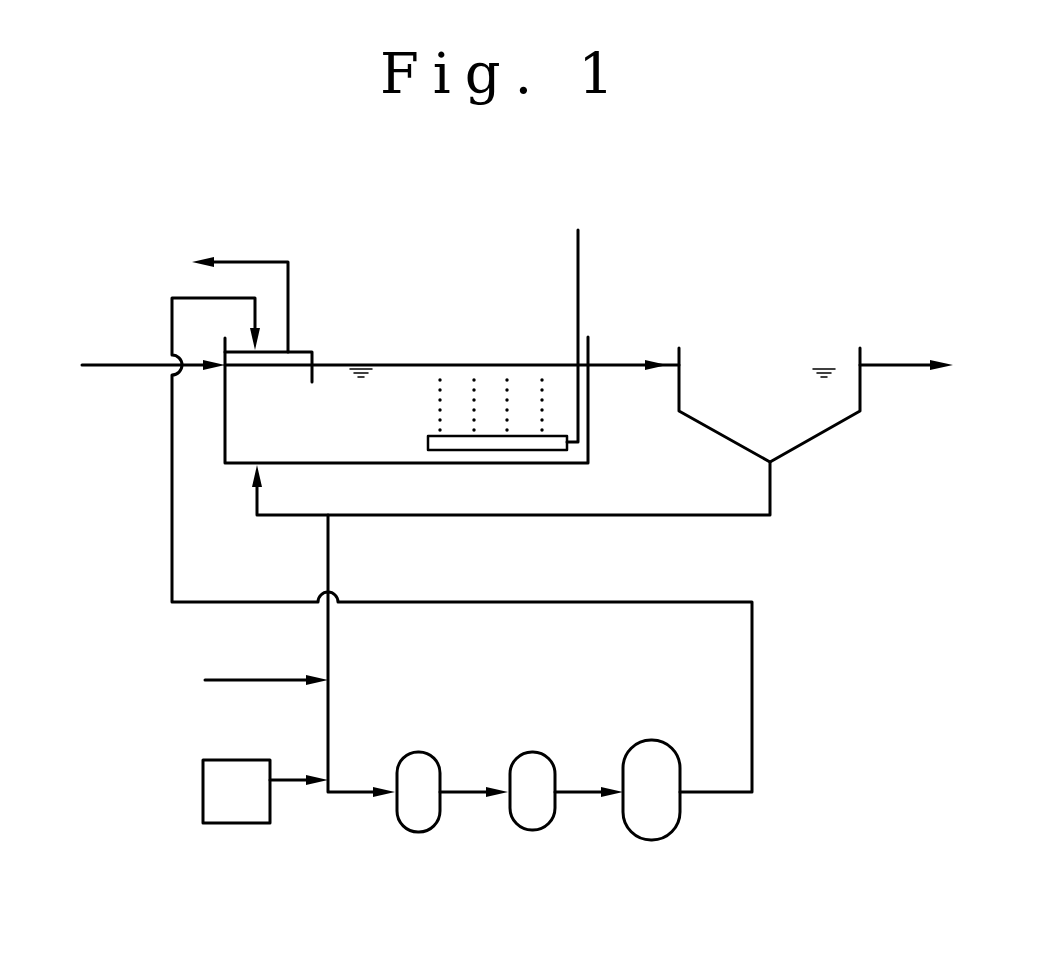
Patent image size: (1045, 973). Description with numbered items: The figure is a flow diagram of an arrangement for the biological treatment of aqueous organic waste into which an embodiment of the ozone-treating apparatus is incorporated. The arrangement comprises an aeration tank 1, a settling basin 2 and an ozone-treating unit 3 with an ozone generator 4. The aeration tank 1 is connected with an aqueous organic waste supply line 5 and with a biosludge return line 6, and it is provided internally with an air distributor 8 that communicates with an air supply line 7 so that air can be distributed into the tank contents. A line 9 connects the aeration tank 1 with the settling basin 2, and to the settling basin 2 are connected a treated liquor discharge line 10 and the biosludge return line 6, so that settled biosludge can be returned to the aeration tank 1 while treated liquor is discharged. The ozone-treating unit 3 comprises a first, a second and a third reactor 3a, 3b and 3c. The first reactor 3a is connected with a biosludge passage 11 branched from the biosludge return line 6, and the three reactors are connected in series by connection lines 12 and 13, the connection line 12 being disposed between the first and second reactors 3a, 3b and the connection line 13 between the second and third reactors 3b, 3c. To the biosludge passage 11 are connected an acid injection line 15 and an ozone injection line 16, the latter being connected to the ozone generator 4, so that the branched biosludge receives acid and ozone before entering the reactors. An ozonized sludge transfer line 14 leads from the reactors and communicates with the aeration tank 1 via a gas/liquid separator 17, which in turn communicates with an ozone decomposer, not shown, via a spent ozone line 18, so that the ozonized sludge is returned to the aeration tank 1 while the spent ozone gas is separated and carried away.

The aeration tank 1 is at (435, 355).
The settling basin 2 is at (770, 355).
The ozone-treating unit 3 is at (538, 828).
The first reactor 3a is at (420, 832).
The second reactor 3b is at (530, 830).
The third reactor 3c is at (651, 825).
The ozone generator 4 is at (237, 823).
The aqueous organic waste supply line 5 is at (112, 368).
The biosludge return line 6 is at (270, 517).
The air supply line 7 is at (578, 277).
The air distributor 8 is at (550, 450).
The line 9 is at (630, 368).
The treated liquor discharge line 10 is at (897, 365).
The biosludge passage 11 is at (330, 655).
The connection line 12 is at (462, 790).
The connection line 13 is at (572, 790).
The ozonized sludge transfer line 14 is at (752, 697).
The acid injection line 15 is at (232, 680).
The ozone injection line 16 is at (293, 782).
The gas/liquid separator 17 is at (302, 350).
The spent ozone line 18 is at (248, 262).